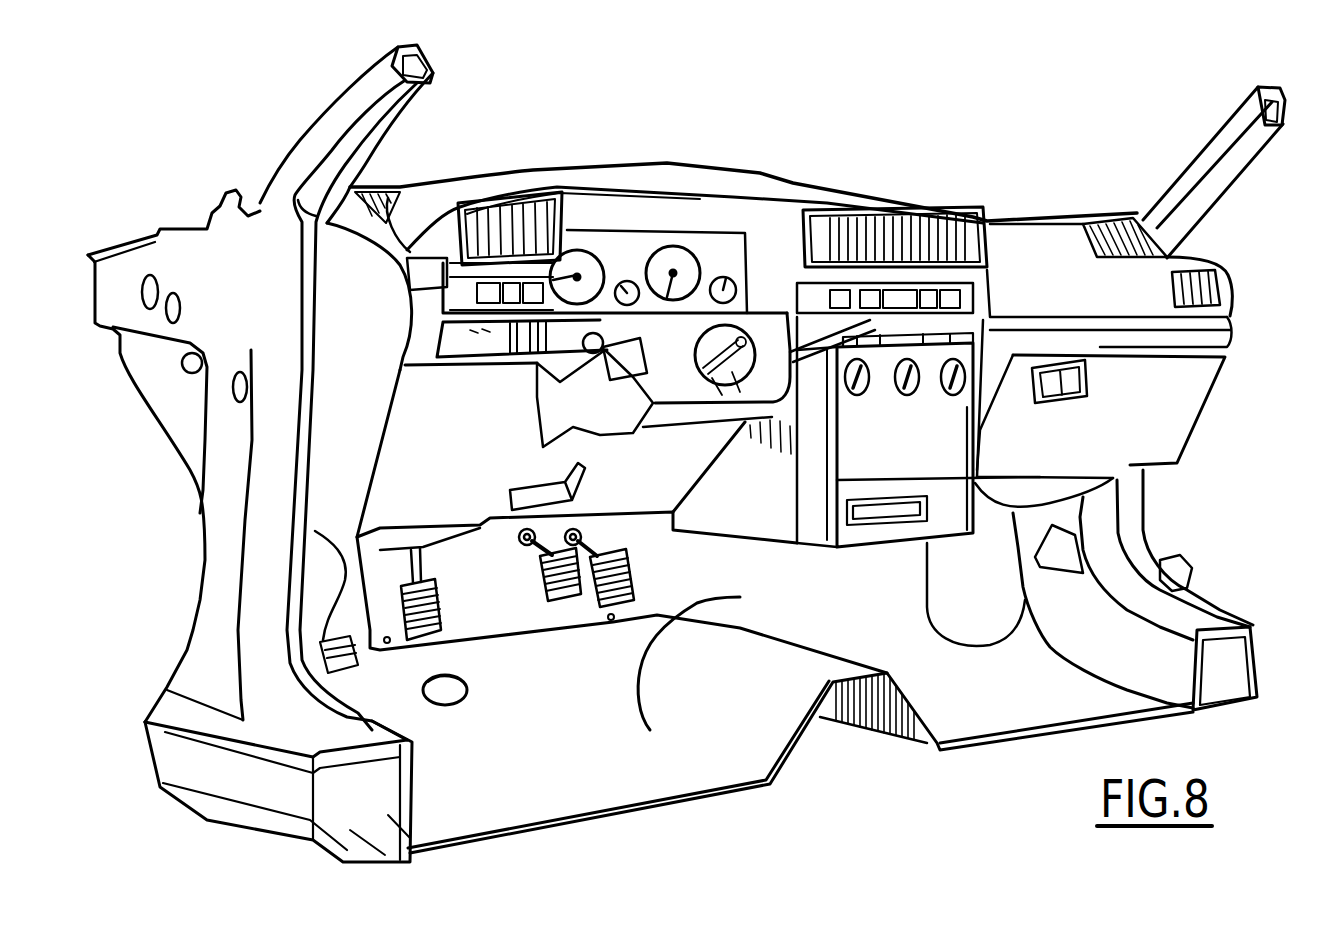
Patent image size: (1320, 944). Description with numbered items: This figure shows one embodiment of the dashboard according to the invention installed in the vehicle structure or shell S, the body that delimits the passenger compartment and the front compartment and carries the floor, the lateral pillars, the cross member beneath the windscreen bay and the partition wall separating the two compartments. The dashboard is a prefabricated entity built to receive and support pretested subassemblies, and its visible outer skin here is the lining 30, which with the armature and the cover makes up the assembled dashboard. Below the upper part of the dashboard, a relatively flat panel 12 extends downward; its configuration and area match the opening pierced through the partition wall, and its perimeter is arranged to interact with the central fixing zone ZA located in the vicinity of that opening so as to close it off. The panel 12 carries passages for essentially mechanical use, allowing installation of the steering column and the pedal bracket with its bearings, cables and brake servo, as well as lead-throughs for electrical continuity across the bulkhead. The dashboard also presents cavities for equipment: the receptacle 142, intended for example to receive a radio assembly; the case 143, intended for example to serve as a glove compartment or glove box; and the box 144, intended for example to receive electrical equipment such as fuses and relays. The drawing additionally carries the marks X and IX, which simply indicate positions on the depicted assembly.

The panel 12 is at (524, 586).
The lining 30 is at (733, 187).
The receptacle 142 is at (901, 298).
The case 143 is at (1097, 421).
The box 144 is at (476, 430).
The structure or shell S is at (217, 507).
The central fixing zone ZA is at (745, 598).
The section line X is at (615, 128).
The section line IX is at (1080, 167).